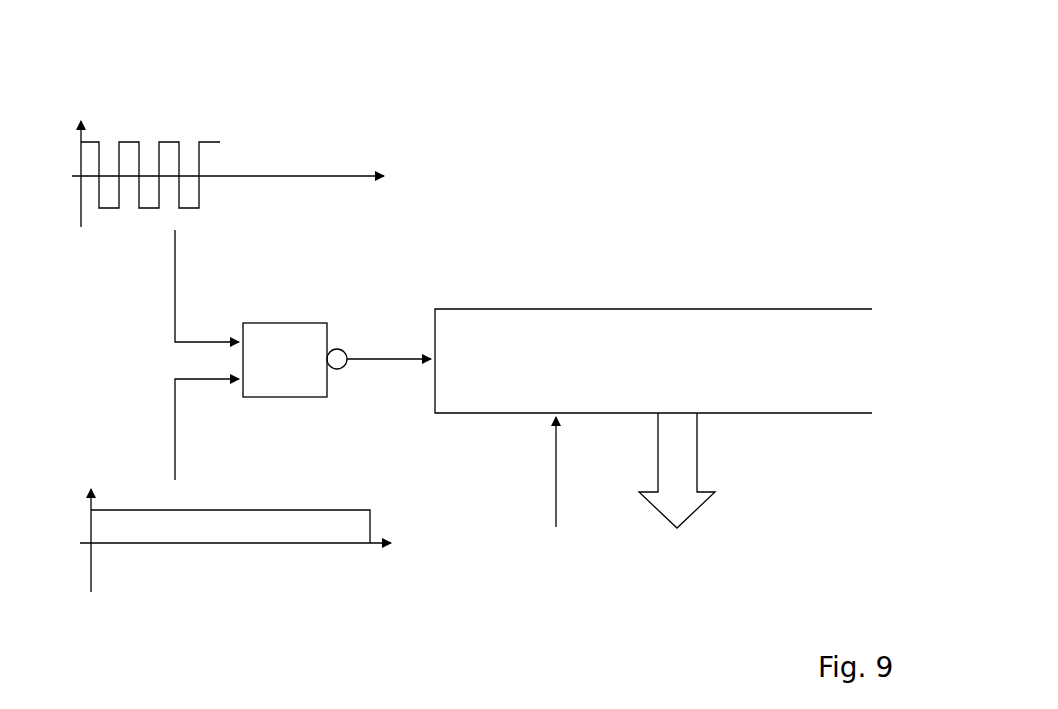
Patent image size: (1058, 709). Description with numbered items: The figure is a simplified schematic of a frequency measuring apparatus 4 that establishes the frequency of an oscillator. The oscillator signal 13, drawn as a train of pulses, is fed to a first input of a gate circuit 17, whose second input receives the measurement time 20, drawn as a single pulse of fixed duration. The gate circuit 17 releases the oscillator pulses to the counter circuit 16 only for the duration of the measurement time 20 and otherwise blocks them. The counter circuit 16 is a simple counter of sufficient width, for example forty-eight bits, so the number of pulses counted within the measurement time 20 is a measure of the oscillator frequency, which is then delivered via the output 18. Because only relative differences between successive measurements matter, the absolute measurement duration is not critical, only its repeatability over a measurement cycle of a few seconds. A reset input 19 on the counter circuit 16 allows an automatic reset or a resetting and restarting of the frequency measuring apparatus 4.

The oscillator signal 13 is at (153, 109).
The frequency measuring apparatus 4 is at (616, 198).
The gate circuit 17 is at (145, 354).
The measurement time 20 is at (313, 487).
The counter circuit 16 is at (653, 361).
The reset input 19 is at (554, 490).
The output 18 is at (677, 487).